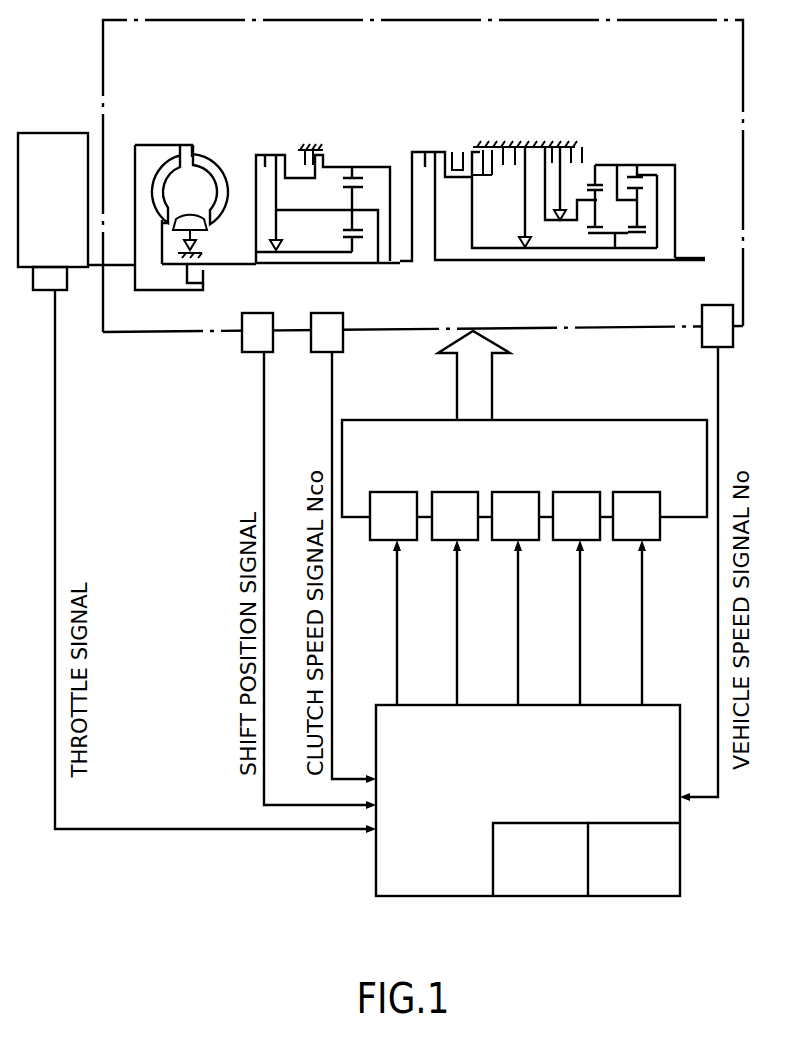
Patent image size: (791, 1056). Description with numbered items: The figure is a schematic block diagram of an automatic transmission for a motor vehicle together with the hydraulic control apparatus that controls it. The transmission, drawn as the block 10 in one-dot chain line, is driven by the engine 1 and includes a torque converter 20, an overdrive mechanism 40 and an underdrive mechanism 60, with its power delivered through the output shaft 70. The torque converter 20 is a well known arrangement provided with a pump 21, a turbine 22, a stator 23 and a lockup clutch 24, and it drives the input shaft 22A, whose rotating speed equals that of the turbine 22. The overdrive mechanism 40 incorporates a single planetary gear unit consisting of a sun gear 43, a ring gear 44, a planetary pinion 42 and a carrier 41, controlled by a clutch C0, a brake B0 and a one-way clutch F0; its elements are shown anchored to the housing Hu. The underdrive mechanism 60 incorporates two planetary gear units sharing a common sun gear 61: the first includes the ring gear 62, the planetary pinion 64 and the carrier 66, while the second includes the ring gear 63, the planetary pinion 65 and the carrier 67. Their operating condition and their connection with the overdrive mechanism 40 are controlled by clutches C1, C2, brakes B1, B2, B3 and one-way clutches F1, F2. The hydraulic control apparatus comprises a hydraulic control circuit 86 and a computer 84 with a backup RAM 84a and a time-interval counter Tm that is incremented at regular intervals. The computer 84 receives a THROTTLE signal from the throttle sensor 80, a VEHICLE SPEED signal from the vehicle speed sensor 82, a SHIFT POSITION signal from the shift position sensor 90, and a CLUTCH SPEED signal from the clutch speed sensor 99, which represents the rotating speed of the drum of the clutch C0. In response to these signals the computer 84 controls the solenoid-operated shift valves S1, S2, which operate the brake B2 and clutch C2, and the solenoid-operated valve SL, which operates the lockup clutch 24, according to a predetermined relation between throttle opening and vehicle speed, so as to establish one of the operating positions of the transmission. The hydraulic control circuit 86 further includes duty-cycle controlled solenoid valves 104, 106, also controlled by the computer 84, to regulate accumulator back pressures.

The engine 1 is at (58, 143).
The automatic transmission 10 is at (118, 268).
The torque converter 20 is at (167, 108).
The pump 21 is at (205, 165).
The turbine 22 is at (163, 175).
The input shaft 22A is at (245, 266).
The stator 23 is at (200, 225).
The lockup clutch 24 is at (168, 290).
The overdrive mechanism 40 is at (336, 116).
The carrier 41 is at (367, 207).
The planetary pinion 42 is at (340, 193).
The sun gear 43 is at (355, 240).
The ring gear 44 is at (347, 173).
The underdrive mechanism 60 is at (536, 106).
The sun gear 61 is at (627, 236).
The ring gear 62 is at (630, 175).
The ring gear 63 is at (590, 180).
The planetary pinion 64 is at (625, 202).
The planetary pinion 65 is at (601, 196).
The carrier 66 is at (625, 212).
The carrier 67 is at (587, 213).
The output shaft 70 is at (693, 259).
The throttle sensor 80 is at (60, 290).
The vehicle speed sensor 82 is at (712, 347).
The computer 84 is at (351, 881).
The backup RAM 84a is at (637, 884).
The hydraulic control circuit 86 is at (608, 420).
The shift position sensor 90 is at (249, 353).
The clutch speed sensor 99 is at (336, 352).
The duty-cycle controlled solenoid valve 104 is at (576, 516).
The duty-cycle controlled solenoid valve 106 is at (636, 516).
The clutch C0 is at (273, 155).
The clutch C1 is at (433, 150).
The clutch C2 is at (458, 150).
The brake B0 is at (325, 160).
The brake B1 is at (503, 148).
The brake B2 is at (542, 150).
The brake B3 is at (583, 150).
The one-way clutch F0 is at (282, 247).
The one-way clutch F1 is at (519, 241).
The one-way clutch F2 is at (556, 226).
The housing Hu is at (308, 148).
The solenoid-operated shift valve S1 is at (393, 516).
The solenoid-operated shift valve S2 is at (455, 516).
The solenoid-operated valve SL is at (515, 516).
The time-interval counter Tm is at (543, 884).